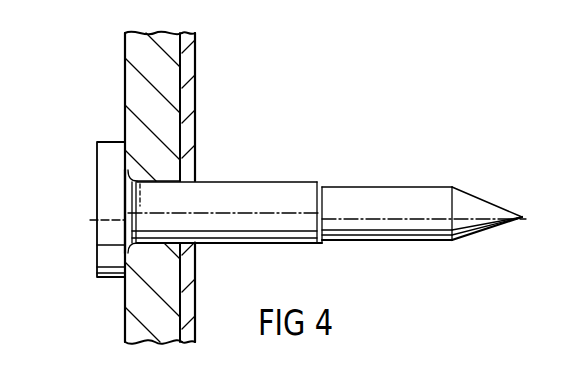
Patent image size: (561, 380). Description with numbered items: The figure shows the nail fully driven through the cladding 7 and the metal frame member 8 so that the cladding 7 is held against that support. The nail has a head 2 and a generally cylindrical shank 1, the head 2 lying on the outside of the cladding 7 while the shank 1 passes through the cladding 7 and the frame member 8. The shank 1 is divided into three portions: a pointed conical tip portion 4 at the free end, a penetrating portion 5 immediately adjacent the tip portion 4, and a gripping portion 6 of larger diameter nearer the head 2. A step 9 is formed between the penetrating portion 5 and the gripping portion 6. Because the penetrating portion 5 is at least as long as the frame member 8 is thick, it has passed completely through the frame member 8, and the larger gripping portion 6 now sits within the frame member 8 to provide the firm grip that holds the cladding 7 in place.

The shank 1 is at (297, 245).
The head 2 is at (108, 190).
The tip portion 4 is at (472, 202).
The penetrating portion 5 is at (393, 197).
The gripping portion 6 is at (252, 197).
The cladding 7 is at (143, 92).
The frame member 8 is at (190, 66).
The step 9 is at (327, 187).